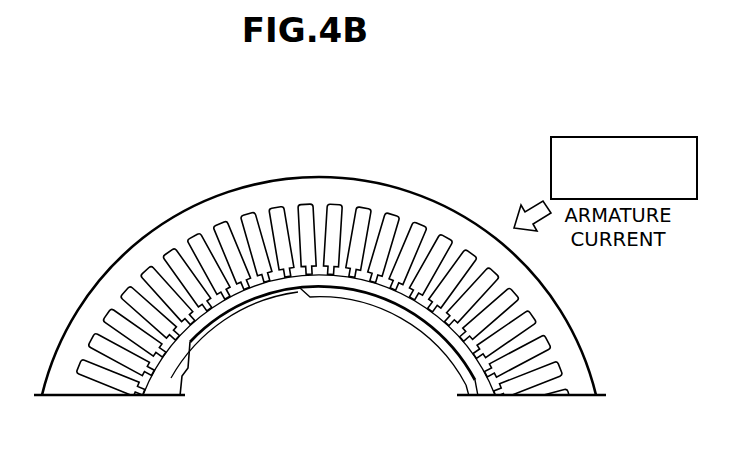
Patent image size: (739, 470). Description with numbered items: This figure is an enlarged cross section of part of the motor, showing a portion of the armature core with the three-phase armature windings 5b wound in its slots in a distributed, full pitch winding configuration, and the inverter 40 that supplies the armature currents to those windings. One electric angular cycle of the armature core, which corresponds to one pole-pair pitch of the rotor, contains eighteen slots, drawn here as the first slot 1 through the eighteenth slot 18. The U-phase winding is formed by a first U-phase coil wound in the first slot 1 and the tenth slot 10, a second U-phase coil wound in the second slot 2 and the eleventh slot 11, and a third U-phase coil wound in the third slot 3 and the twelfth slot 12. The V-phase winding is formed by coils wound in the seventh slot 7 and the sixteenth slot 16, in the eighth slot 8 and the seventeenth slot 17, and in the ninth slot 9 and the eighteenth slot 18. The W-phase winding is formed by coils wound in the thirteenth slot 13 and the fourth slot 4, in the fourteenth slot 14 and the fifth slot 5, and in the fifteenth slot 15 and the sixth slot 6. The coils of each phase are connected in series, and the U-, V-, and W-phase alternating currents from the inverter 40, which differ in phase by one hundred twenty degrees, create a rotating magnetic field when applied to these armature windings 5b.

The three-phase armature windings 5b is at (420, 181).
The inverter 40 is at (623, 137).
The first slot 1 is at (527, 352).
The second slot 2 is at (512, 329).
The third slot 3 is at (496, 309).
The fourth slot 4 is at (479, 289).
The fifth slot 5 is at (458, 272).
The sixth slot 6 is at (435, 257).
The seventh slot 7 is at (411, 246).
The eighth slot 8 is at (386, 238).
The ninth slot 9 is at (359, 231).
The tenth slot 10 is at (334, 228).
The eleventh slot 11 is at (306, 229).
The twelfth slot 12 is at (280, 231).
The thirteenth slot 13 is at (254, 237).
The fourteenth slot 14 is at (229, 245).
The fifteenth slot 15 is at (205, 257).
The sixteenth slot 16 is at (182, 272).
The seventeenth slot 17 is at (161, 288).
The eighteenth slot 18 is at (142, 307).